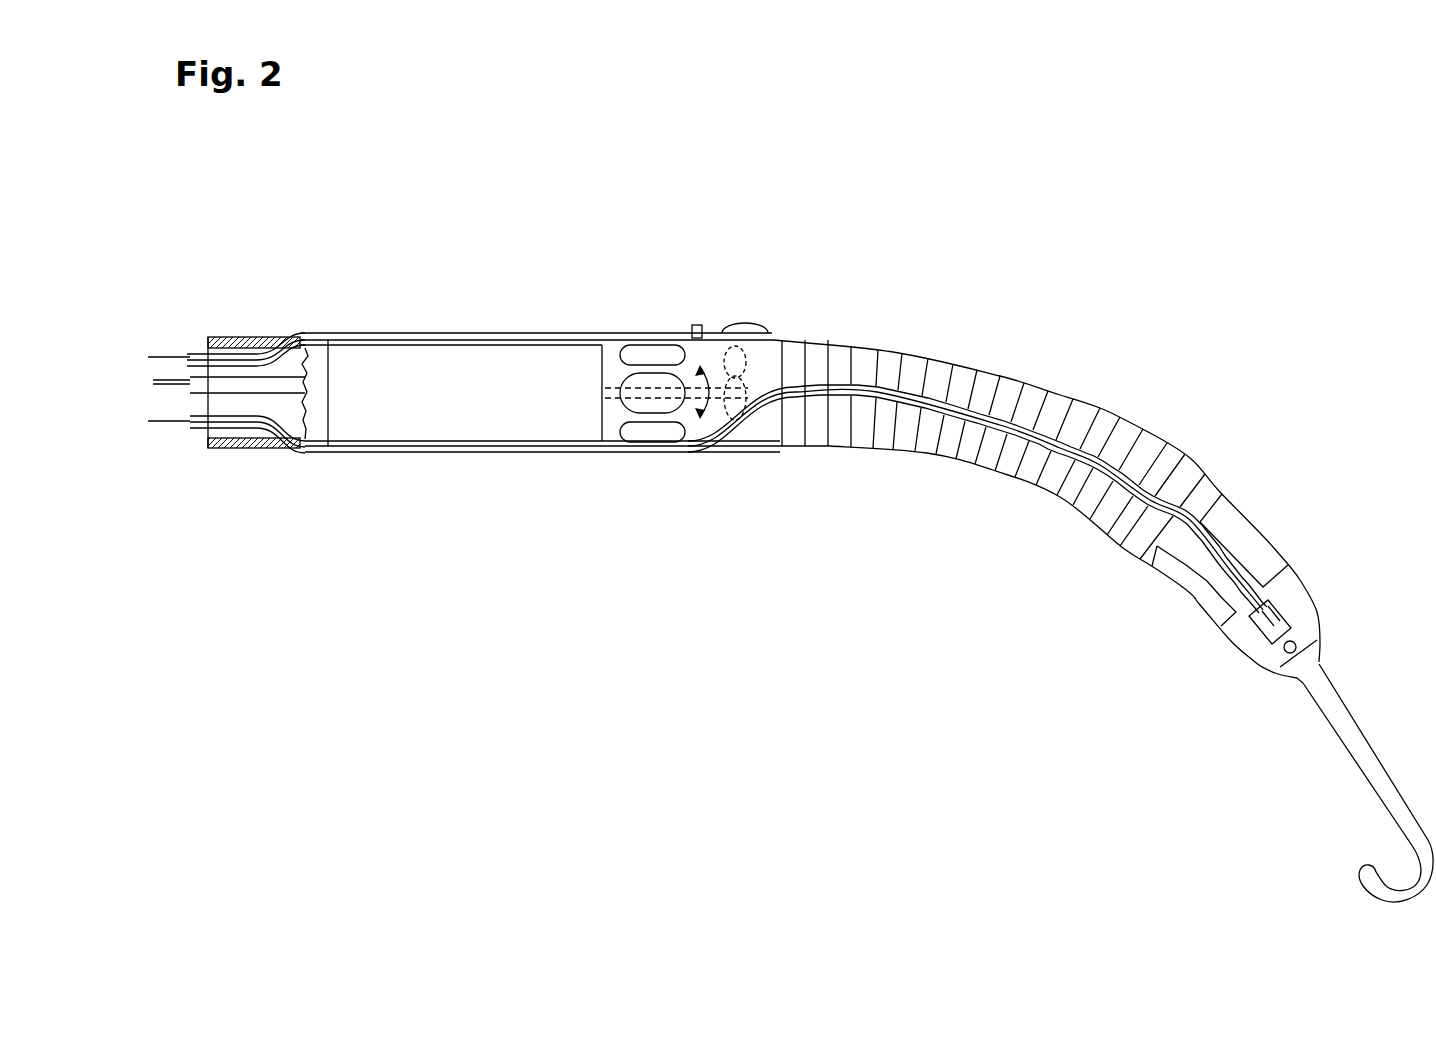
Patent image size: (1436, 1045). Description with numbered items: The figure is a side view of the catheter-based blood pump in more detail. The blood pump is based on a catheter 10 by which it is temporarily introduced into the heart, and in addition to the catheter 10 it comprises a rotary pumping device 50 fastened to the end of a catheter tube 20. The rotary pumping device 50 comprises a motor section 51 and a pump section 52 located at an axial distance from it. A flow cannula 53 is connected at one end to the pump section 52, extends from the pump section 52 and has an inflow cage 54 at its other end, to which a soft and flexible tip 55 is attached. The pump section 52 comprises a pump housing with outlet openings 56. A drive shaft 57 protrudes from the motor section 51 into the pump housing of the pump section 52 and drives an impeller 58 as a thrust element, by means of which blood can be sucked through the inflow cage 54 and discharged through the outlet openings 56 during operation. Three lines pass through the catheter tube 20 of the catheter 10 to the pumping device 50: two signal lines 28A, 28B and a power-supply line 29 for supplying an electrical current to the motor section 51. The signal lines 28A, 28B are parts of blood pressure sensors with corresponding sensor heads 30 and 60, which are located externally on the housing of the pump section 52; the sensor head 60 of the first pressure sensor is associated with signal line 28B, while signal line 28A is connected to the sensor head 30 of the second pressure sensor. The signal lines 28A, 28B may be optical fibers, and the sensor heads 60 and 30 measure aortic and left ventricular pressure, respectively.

The catheter 10 is at (312, 273).
The catheter tube 20 is at (250, 337).
The signal line 28A is at (152, 427).
The signal line 28B is at (162, 355).
The power-supply line 29 is at (228, 384).
The sensor head 30 is at (1240, 638).
The rotary pumping device 50 is at (958, 234).
The motor section 51 is at (505, 409).
The pump section 52 is at (708, 493).
The flow cannula 53 is at (1018, 372).
The inflow cage 54 is at (1240, 527).
The tip 55 is at (1378, 764).
The outlet openings 56 is at (652, 433).
The drive shaft 57 is at (647, 388).
The impeller 58 is at (738, 412).
The sensor head 60 is at (682, 300).